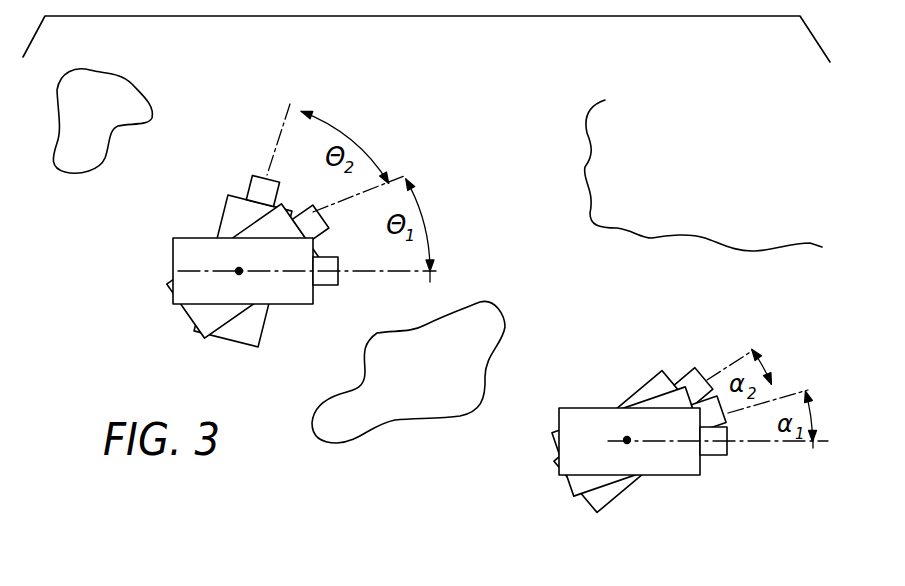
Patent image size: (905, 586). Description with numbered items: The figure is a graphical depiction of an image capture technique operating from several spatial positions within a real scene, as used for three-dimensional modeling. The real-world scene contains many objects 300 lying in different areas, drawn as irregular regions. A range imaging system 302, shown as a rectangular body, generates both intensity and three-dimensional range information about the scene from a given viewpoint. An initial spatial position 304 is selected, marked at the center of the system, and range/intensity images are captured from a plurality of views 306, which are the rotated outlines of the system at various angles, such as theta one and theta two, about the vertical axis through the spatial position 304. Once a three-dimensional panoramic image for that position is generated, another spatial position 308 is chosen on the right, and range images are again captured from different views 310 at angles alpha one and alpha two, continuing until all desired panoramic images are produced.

The objects 300 is at (118, 118).
The range imaging system 302 is at (173, 272).
The initial spatial position 304 is at (240, 273).
The plurality of views 306 is at (252, 230).
The another spatial position 308 is at (626, 440).
The different views 310 is at (673, 397).